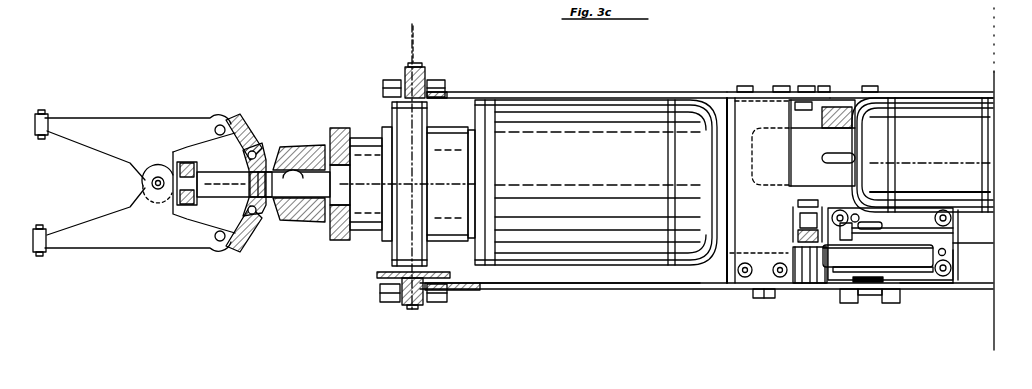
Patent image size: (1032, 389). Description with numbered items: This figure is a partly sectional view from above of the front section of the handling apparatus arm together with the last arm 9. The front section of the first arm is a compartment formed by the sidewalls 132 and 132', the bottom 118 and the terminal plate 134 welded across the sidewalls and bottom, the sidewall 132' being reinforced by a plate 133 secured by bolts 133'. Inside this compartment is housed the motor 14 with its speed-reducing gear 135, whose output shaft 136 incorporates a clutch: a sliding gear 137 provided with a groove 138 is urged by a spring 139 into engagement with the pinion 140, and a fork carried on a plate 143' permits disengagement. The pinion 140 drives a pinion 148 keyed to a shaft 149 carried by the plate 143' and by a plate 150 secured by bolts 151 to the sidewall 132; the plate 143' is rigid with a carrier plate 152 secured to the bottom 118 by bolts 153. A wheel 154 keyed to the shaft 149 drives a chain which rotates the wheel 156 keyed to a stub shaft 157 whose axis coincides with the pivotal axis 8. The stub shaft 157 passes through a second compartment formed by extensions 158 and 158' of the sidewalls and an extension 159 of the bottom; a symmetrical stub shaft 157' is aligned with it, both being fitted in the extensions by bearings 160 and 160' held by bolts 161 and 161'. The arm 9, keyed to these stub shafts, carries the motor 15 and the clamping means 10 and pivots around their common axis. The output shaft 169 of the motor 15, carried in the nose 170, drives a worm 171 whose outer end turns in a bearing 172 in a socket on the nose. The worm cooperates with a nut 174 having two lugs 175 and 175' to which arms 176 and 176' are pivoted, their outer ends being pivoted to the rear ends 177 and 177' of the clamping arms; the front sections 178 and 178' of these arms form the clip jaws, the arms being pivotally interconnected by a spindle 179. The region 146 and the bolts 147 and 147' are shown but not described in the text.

The pivotal axis 8 is at (414, 37).
The arm 9 is at (461, 181).
The clamping means 10 is at (108, 131).
The motor 14 is at (958, 136).
The motor 15 is at (600, 135).
The bottom 118 is at (983, 244).
The sidewall 132 is at (993, 179).
The sidewall 132' is at (911, 75).
The plate 133 is at (819, 75).
The bolts 133' is at (829, 72).
The terminal plate 134 is at (712, 98).
The speed-reducing gear 135 is at (826, 148).
The output shaft of the reducing gear 136 is at (820, 285).
The sliding gear 137 is at (798, 232).
The groove 138 is at (806, 285).
The spring 139 is at (798, 214).
The pinion 140 is at (796, 285).
The plate 143' is at (896, 228).
The partition wall 146 is at (790, 203).
The bolts 147 is at (753, 302).
The bolts 147' is at (760, 72).
The pinion 148 is at (944, 279).
The shaft 149 is at (872, 296).
The plate 150 is at (920, 291).
The bolts 151 is at (848, 304).
The carrier plate 152 is at (953, 238).
The bolts 153 is at (848, 210).
The wheel 154 is at (880, 275).
The wheel 156 is at (395, 275).
The stub shaft 157 is at (426, 325).
The stub shaft 157' is at (442, 62).
The extension of the sidewall 158 is at (706, 314).
The extension of the sidewall 158' is at (577, 76).
The extension of the bottom 159 is at (478, 288).
The bearing 160 is at (400, 311).
The bearing 160' is at (405, 63).
The bolts 161 is at (409, 314).
The bolts 161' is at (373, 62).
The output shaft 169 is at (343, 137).
The nose 170 is at (312, 147).
The worm 171 is at (227, 186).
The bearing 172 is at (183, 205).
The nut 174 is at (264, 168).
The lug 175 is at (266, 237).
The lug 175' is at (267, 133).
The arm 176 is at (242, 243).
The arm 176' is at (244, 127).
The rear end of the clamping arm 177 is at (204, 216).
The rear end of the clamping arm 177' is at (203, 123).
The front section of the clamping arm 178 is at (54, 229).
The front section of the clamping arm 178' is at (49, 142).
The spindle 179 is at (155, 190).